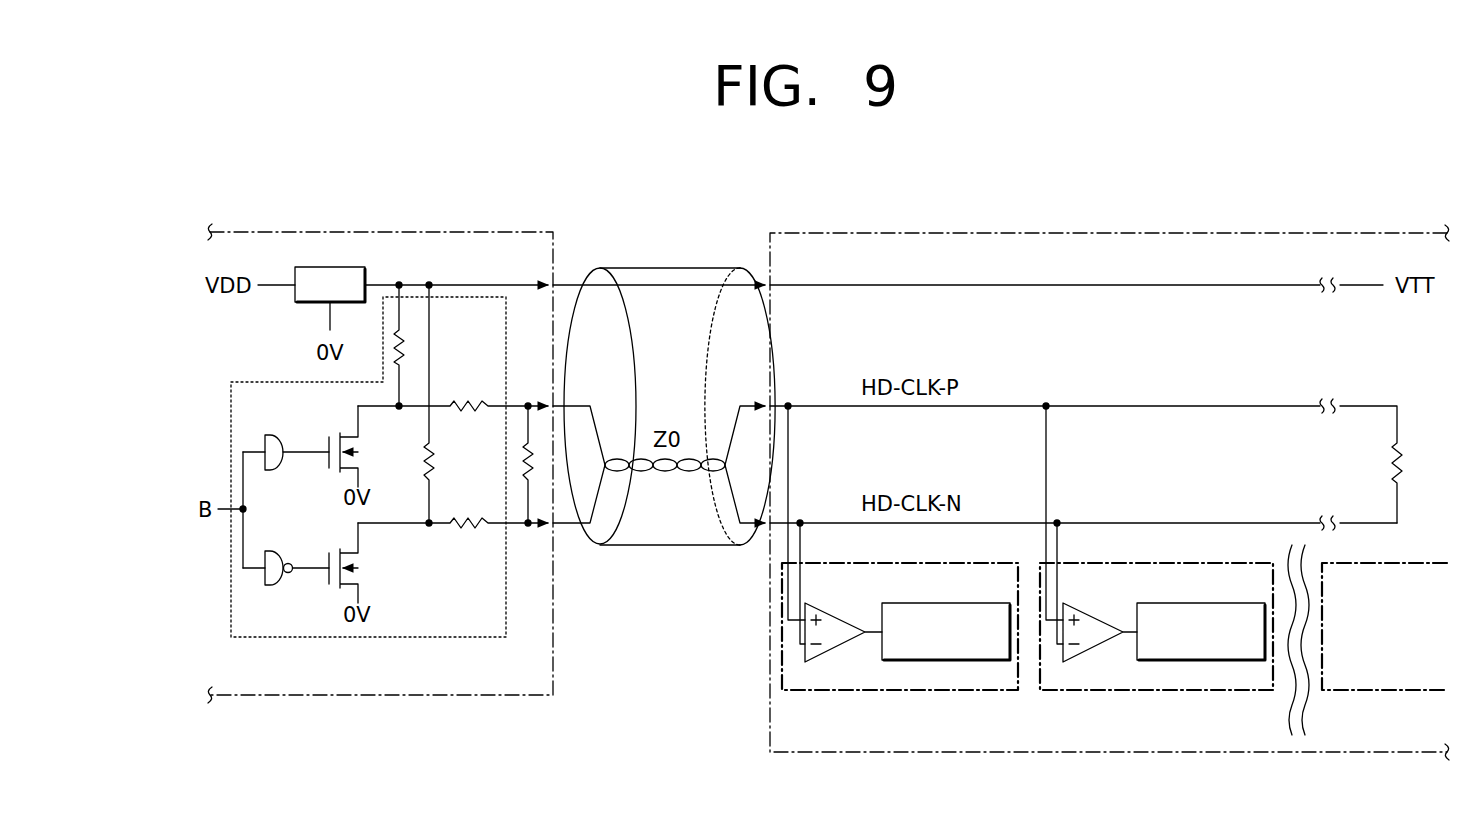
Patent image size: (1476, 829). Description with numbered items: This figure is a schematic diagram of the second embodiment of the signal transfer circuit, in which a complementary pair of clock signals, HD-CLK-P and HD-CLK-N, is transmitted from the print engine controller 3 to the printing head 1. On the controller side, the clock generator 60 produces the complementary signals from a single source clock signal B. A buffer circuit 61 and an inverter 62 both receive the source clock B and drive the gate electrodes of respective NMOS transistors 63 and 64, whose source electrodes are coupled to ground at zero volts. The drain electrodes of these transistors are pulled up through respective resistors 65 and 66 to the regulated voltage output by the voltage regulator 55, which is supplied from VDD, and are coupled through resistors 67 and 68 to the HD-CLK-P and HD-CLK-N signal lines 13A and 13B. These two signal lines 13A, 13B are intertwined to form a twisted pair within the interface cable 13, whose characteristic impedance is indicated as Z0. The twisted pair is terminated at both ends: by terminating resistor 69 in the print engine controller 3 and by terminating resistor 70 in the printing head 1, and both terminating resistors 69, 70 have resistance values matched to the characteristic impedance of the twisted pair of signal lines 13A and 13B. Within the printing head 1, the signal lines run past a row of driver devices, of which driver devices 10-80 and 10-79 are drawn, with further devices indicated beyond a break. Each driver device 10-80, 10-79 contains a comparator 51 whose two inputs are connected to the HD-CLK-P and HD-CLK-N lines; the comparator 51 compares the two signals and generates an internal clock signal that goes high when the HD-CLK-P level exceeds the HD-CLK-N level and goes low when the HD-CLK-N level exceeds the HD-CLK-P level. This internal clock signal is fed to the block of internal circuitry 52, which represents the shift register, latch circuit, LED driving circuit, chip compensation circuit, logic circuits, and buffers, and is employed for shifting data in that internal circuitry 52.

The printing head 1 is at (768, 727).
The print engine controller 3 is at (513, 232).
The interface cable 13 is at (665, 547).
The HD-CLK-P signal line 13A is at (1150, 406).
The HD-CLK-N signal line 13B is at (1150, 523).
The comparator 51 is at (840, 652).
The internal circuitry 52 is at (950, 660).
The voltage regulator 55 is at (293, 303).
The clock generator 60 is at (230, 583).
The buffer circuit 61 is at (283, 442).
The inverter 62 is at (288, 562).
The NMOS transistor 63 is at (358, 452).
The NMOS transistor 64 is at (358, 568).
The resistor 65 is at (408, 340).
The resistor 66 is at (435, 463).
The resistor 67 is at (469, 400).
The resistor 68 is at (476, 533).
The terminating resistor 69 is at (533, 458).
The terminating resistor 70 is at (1406, 457).
The driver device 10-80 is at (922, 563).
The driver device 10-79 is at (1177, 563).